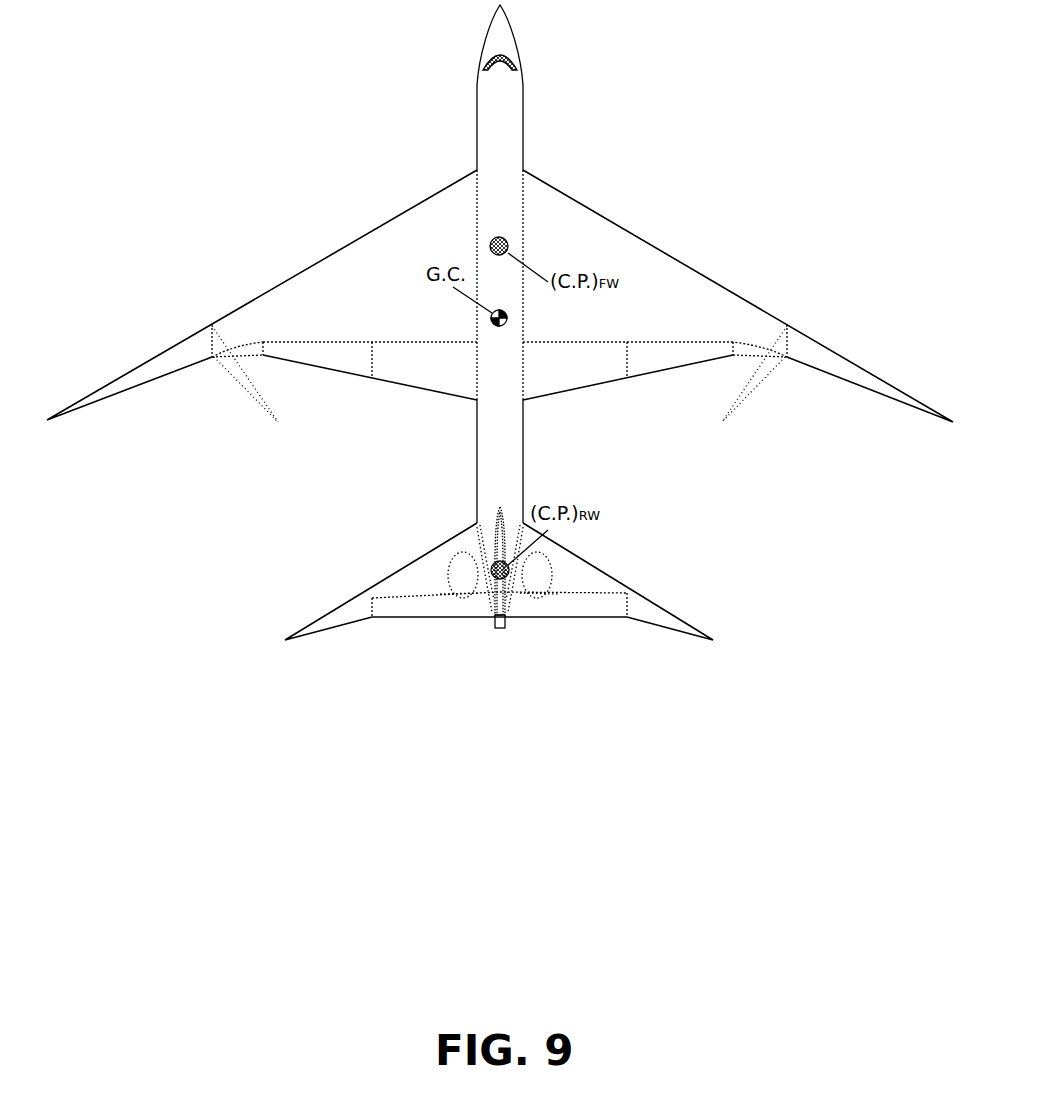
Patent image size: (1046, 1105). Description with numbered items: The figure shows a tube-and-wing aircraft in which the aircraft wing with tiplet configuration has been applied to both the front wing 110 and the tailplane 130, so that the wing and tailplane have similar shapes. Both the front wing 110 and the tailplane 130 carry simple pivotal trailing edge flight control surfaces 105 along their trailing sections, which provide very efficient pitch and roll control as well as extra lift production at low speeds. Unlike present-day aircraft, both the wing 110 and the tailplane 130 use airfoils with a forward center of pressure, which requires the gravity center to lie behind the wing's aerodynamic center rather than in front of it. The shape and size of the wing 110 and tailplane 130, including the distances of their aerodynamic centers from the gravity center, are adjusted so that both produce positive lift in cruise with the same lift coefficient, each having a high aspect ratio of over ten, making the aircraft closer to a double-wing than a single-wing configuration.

The trailing edge flight control surfaces 105 is at (665, 357).
The front wing 110 is at (808, 350).
The tailplane 130 is at (645, 608).